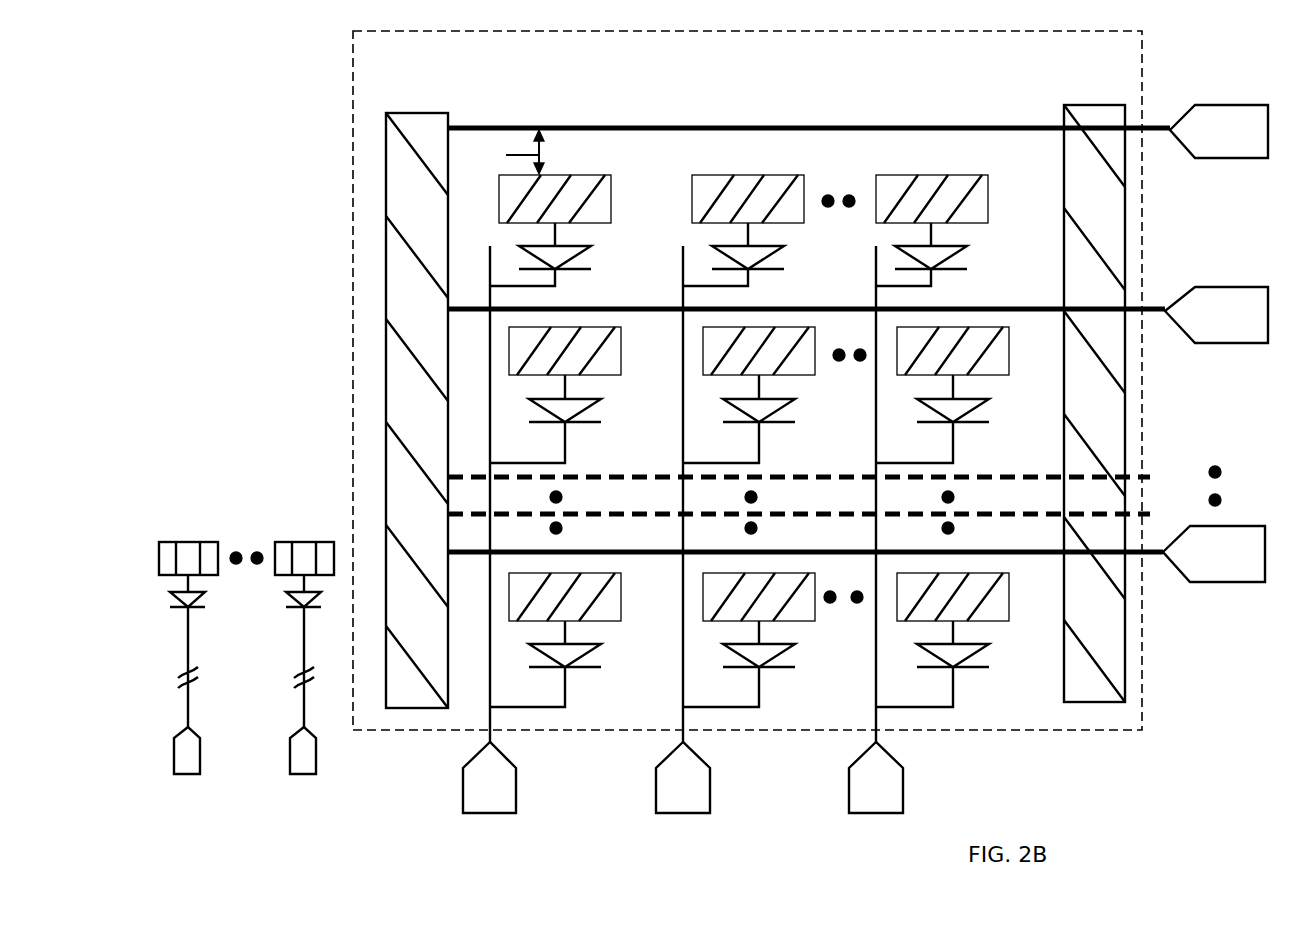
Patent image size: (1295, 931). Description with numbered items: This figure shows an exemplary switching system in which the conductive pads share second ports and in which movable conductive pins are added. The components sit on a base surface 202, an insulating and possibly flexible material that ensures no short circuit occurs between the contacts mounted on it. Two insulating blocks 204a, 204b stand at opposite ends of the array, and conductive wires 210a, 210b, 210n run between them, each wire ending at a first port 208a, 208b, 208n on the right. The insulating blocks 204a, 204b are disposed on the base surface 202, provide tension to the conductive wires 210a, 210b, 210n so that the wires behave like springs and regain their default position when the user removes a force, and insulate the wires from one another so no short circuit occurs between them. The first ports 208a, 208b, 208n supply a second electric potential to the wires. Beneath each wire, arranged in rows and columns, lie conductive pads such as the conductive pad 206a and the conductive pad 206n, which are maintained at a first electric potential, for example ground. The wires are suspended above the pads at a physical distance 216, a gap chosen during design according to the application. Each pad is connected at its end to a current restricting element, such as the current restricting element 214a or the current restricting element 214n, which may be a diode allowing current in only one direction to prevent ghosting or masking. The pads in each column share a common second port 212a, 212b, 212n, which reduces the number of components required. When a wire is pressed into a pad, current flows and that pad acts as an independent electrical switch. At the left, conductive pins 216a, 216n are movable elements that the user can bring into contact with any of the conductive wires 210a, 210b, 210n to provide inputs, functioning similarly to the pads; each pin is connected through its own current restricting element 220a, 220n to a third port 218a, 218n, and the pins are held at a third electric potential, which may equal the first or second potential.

The base surface 202 is at (351, 205).
The insulating block 204a is at (447, 94).
The insulating block 204b is at (1097, 85).
The conductive pad 206a is at (611, 207).
The conductive pad 206n is at (1008, 597).
The first port 208a is at (1240, 158).
The first port 208b is at (1240, 343).
The first port 208n is at (1237, 582).
The conductive wire 210a is at (897, 111).
The conductive wire 210b is at (1022, 293).
The conductive wire 210n is at (638, 553).
The second port 212a is at (462, 790).
The second port 212b is at (655, 790).
The second port 212n is at (862, 790).
The current restricting element 214a is at (565, 265).
The current restricting element 214n is at (975, 655).
The physical distance 216 is at (503, 152).
The conductive pin 216a is at (178, 542).
The conductive pin 216n is at (294, 542).
The third port 218a is at (188, 774).
The third port 218n is at (304, 774).
The current restricting element 220a is at (188, 612).
The current restricting element 220n is at (304, 612).